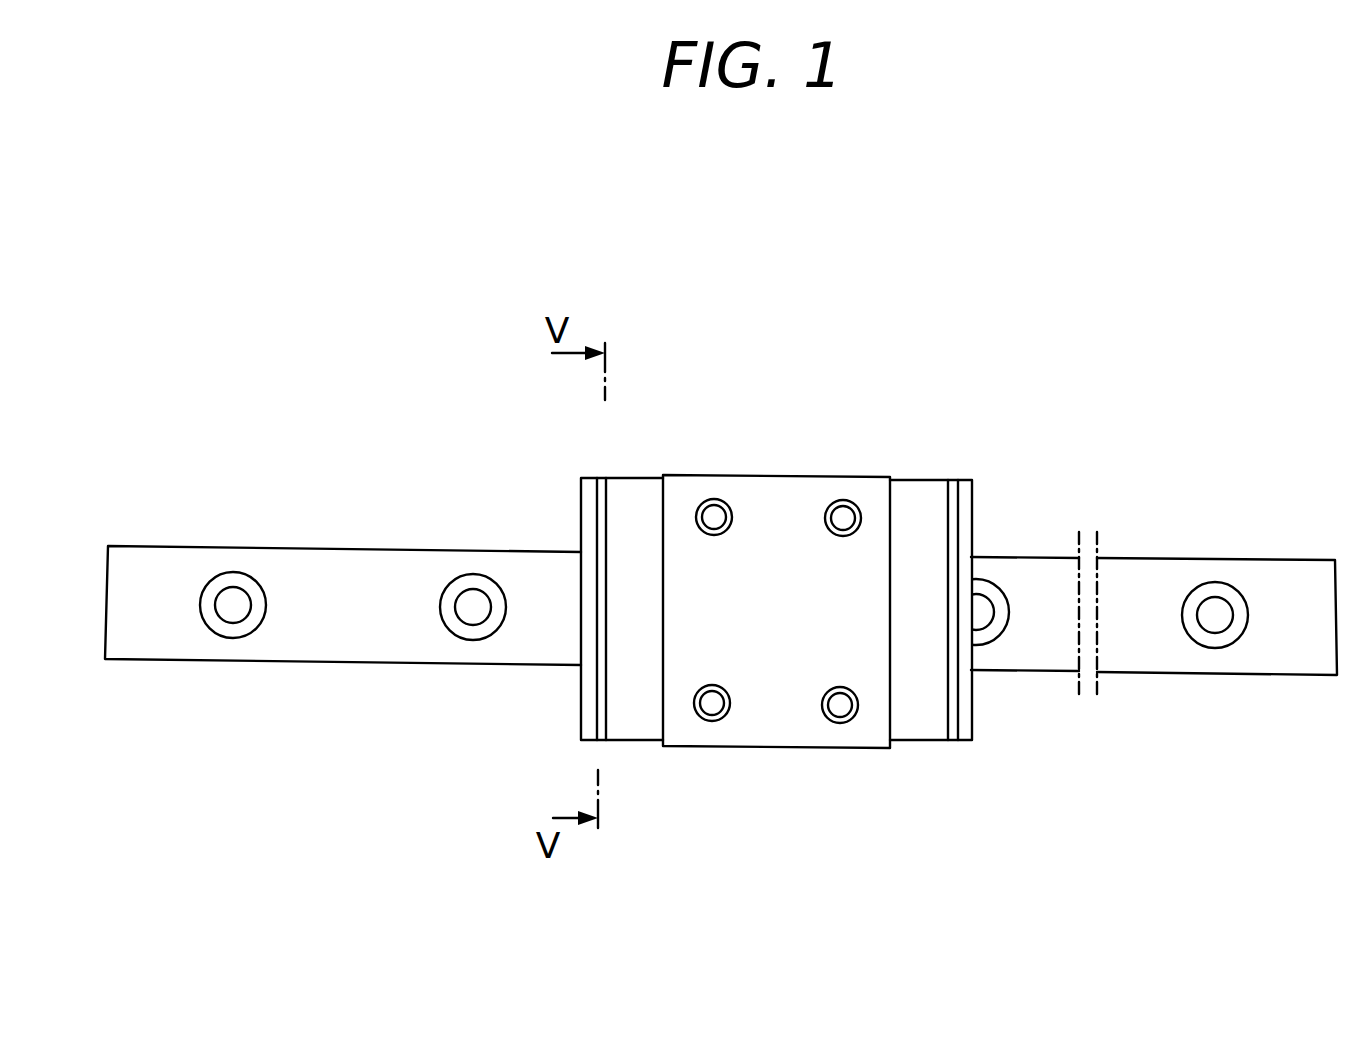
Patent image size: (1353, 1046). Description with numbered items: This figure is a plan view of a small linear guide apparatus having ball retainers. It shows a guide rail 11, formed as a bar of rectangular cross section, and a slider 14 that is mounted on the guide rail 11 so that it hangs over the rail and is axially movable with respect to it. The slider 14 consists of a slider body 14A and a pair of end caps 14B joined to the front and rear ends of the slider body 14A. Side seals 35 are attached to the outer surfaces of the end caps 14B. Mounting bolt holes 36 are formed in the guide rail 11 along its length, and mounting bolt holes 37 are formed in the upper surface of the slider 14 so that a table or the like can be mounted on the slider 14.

The guide rail 11 is at (721, 583).
The slider 14 is at (756, 602).
The slider body 14A is at (776, 602).
The end caps 14B is at (638, 513).
The side seals 35 is at (593, 500).
The mounting bolt holes 36 is at (480, 623).
The mounting bolt holes 37 is at (713, 705).